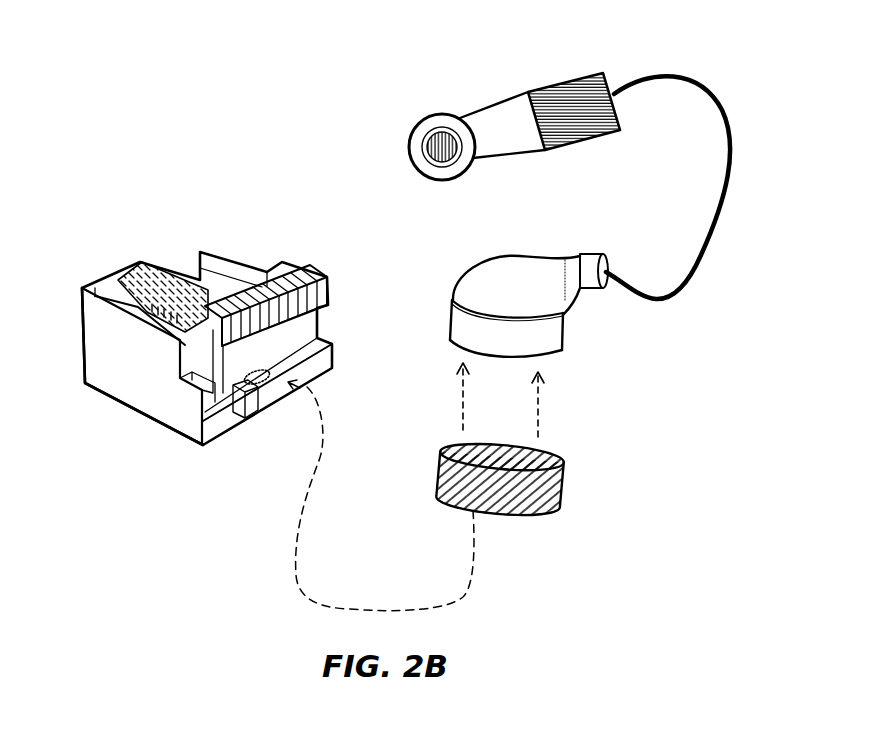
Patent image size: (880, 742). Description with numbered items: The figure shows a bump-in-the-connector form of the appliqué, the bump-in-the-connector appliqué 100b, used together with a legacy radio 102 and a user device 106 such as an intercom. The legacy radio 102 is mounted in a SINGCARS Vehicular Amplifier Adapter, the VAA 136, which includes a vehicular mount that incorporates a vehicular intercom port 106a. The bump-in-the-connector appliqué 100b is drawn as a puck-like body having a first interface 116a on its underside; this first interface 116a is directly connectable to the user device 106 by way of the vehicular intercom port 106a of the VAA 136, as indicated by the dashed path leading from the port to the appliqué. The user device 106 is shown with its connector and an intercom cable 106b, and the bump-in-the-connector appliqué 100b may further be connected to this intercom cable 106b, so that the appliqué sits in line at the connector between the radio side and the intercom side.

The legacy radio 102 is at (121, 276).
The SINGCARS Vehicular Amplifier Adapter (VAA) 136 is at (132, 410).
The vehicular intercom port 106a is at (255, 386).
The user device 106 is at (488, 103).
The intercom cable 106b is at (534, 270).
The bump-in-the-connector appliqué 100b is at (563, 485).
The first interface 116a is at (498, 514).